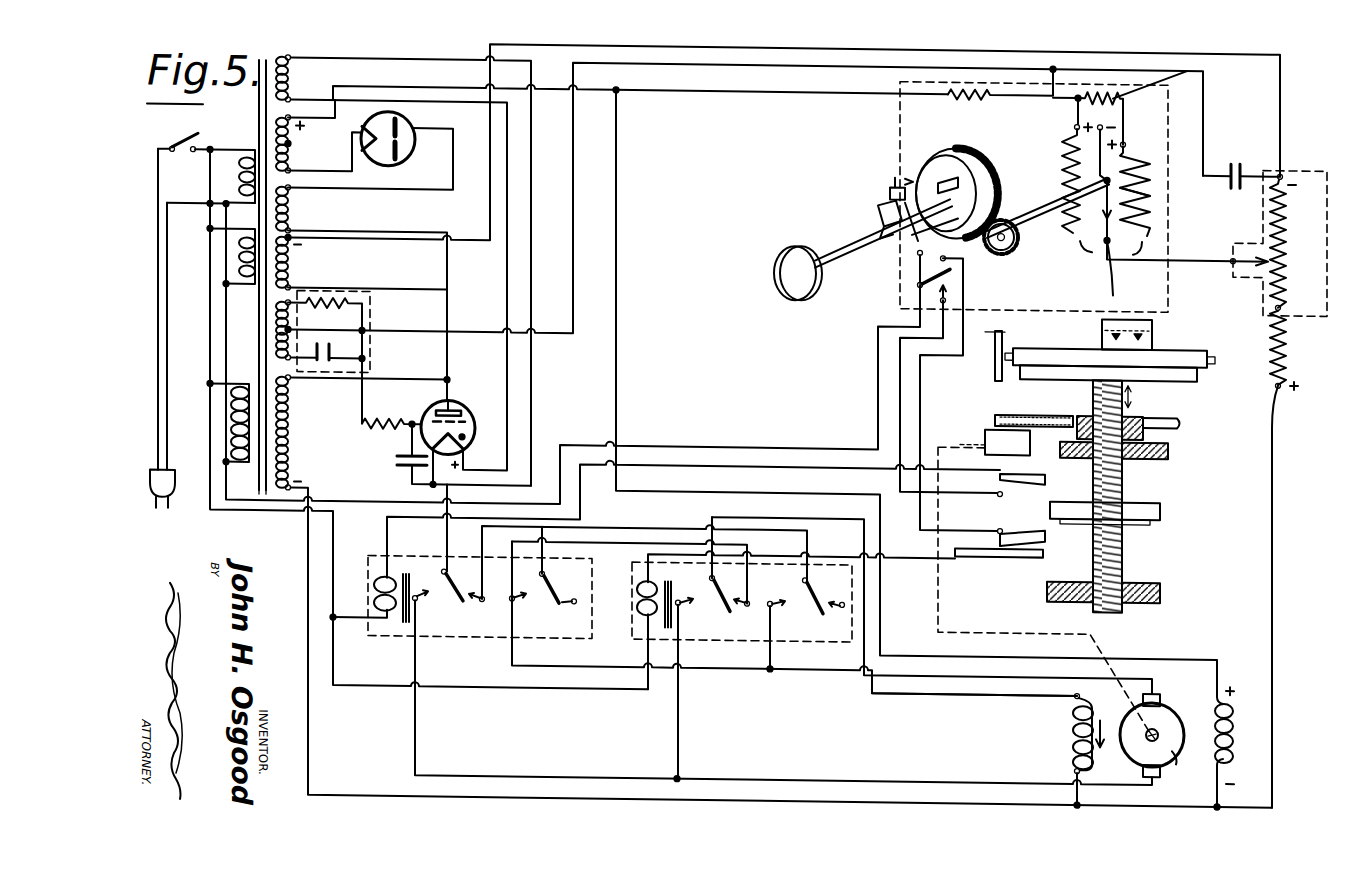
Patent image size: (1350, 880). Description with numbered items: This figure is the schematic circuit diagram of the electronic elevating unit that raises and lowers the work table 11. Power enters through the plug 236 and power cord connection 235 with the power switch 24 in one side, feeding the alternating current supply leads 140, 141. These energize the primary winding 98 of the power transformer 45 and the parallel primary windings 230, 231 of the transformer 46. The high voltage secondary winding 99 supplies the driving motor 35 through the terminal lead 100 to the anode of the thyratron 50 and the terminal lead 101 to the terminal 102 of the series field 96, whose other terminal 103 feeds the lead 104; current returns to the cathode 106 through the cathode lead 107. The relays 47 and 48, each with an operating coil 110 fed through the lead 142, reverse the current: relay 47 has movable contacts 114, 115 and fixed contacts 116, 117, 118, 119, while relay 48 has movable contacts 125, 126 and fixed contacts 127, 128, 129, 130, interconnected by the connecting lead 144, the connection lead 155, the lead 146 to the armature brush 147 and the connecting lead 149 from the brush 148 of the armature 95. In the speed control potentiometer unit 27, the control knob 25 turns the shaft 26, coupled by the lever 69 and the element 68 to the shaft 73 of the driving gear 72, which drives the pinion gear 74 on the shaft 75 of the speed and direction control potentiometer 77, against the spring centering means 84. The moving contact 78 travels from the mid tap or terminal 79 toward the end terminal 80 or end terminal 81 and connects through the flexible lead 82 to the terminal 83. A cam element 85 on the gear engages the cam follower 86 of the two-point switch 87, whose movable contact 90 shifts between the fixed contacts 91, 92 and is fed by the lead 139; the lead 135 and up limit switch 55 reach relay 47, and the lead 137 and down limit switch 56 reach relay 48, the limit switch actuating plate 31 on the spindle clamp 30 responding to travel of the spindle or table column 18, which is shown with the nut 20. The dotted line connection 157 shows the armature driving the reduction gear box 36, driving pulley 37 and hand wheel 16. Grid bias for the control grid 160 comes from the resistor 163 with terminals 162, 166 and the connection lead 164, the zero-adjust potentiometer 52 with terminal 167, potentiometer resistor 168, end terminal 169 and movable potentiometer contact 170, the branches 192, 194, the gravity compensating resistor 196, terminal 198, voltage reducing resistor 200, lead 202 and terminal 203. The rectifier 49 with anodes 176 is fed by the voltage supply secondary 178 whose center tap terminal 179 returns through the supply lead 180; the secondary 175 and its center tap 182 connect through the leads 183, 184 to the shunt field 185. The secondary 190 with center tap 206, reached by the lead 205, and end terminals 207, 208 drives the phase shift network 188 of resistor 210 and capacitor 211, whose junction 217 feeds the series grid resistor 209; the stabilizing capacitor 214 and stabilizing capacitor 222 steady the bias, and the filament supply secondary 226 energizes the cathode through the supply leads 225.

The work table 11 is at (1190, 344).
The hand wheel 16 is at (1178, 418).
The spindle or table column 18 is at (1124, 552).
The nut 20 is at (1170, 446).
The power switch 24 is at (186, 162).
The control knob 25 is at (800, 300).
The shaft 26 is at (855, 240).
The speed control potentiometer unit 27 is at (895, 108).
The spindle clamp or attachment 30 is at (1162, 505).
The limit switch actuating plate 31 is at (1003, 494).
The driving motor 35 is at (1204, 703).
The reduction gear box 36 is at (980, 440).
The driving pulley 37 is at (1000, 372).
The power transformer 45 is at (253, 502).
The transformer 46 is at (252, 118).
The relay 47 is at (336, 541).
The relay 48 is at (618, 641).
The rectifier 49 is at (411, 125).
The thyratron 50 is at (450, 409).
The zero-adjust potentiometer 52 is at (1290, 185).
The up limit switch 55 is at (1080, 486).
The down limit switch 56 is at (988, 402).
The cam 68 is at (878, 205).
The lever 69 is at (889, 181).
The driving gear 72 is at (975, 158).
The shaft 73 is at (944, 196).
The pinion gear 74 is at (1010, 248).
The shaft 75 is at (1022, 229).
The speed and direction control potentiometer 77 is at (1129, 186).
The moving contact 78 is at (1152, 206).
The mid tap or terminal 79 is at (1112, 240).
The end terminal 80 is at (1073, 122).
The end terminal 81 is at (1102, 120).
The flexible lead 82 is at (1100, 125).
The terminal 83 is at (1124, 97).
The spring centering means 84 is at (962, 140).
The cam element 85 is at (910, 240).
The cam follower or movable control element 86 is at (917, 254).
The two-point switch 87 is at (990, 295).
The movable contact 90 is at (917, 284).
The fixed contact 91 is at (961, 260).
The fixed contact 92 is at (966, 285).
The armature 95 is at (1181, 765).
The series field 96 is at (1073, 730).
The primary winding 98 is at (230, 432).
The high voltage secondary winding 99 is at (292, 438).
The terminal lead 100 is at (380, 383).
The terminal lead 101 is at (308, 753).
The terminal 102 is at (1073, 766).
The terminal 103 is at (1072, 695).
The lead 104 is at (891, 698).
The cathode 106 is at (466, 443).
The cathode lead 107 is at (445, 541).
The operating coil 110 is at (640, 584).
The movable contact 114 is at (463, 567).
The movable contact 115 is at (565, 565).
The fixed contact 116 is at (482, 606).
The fixed contact 117 is at (574, 607).
The fixed contact 118 is at (417, 606).
The fixed contact 119 is at (513, 584).
The movable contact 125 is at (715, 564).
The movable contact 126 is at (825, 590).
The fixed contact 127 is at (640, 586).
The fixed contact 128 is at (842, 606).
The fixed contact 129 is at (680, 606).
The fixed contact 130 is at (773, 619).
The lead 135 is at (688, 466).
The lead 137 is at (1000, 553).
The lead 139 is at (735, 447).
The A. C. power supply lead 140 is at (262, 353).
The A. C. power supply lead 141 is at (262, 376).
The lead 142 is at (336, 516).
The connecting lead 144 is at (660, 529).
The lead 146 is at (716, 672).
The armature brush 147 is at (1161, 694).
The brush 148 is at (1160, 774).
The connecting lead 149 is at (648, 779).
The connection lead 155 is at (597, 529).
The dotted line connection 157 is at (1000, 629).
The control grid 160 is at (462, 413).
The terminal 162 is at (1296, 597).
The resistor 163 is at (1208, 357).
The connection lead 164 is at (1272, 634).
The terminal 166 is at (1277, 318).
The terminal 167 is at (1282, 300).
The potentiometer resistor 168 is at (1283, 232).
The end terminal 169 is at (1283, 166).
The movable potentiometer contact 170 is at (1231, 254).
The secondary 175 is at (290, 151).
The rectifier anodes 176 is at (401, 147).
The voltage supply secondary 178 is at (292, 236).
The center tap terminal 179 is at (292, 245).
The supply lead 180 is at (448, 258).
The center tap 182 is at (292, 151).
The lead 183 is at (381, 92).
The lead 184 is at (617, 322).
The shunt field 185 is at (1232, 720).
The phase shift network 188 is at (363, 303).
The secondary 190 is at (262, 330).
The potentiometer arm or branch 192 is at (1060, 150).
The potentiometer arm or branch 194 is at (1168, 158).
The balancing or gravity compensating resistor 196 is at (1203, 65).
The terminal 198 is at (1053, 93).
The series voltage reducing resistor 200 is at (948, 91).
The lead 202 is at (752, 92).
The terminal 203 is at (620, 93).
The lead 205 is at (866, 65).
The center tap 206 is at (365, 333).
The end terminal 207 is at (262, 307).
The end terminal 208 is at (276, 364).
The series grid resistor 209 is at (384, 441).
The resistor 210 is at (356, 293).
The capacitor 211 is at (345, 353).
The stabilizing capacitor 214 is at (397, 480).
The junction 217 is at (345, 364).
The stabilizing capacitor 222 is at (1250, 146).
The supply leads 225 is at (531, 401).
The filament supply secondary 226 is at (325, 88).
The primary winding 230 is at (211, 165).
The primary winding 231 is at (246, 270).
The power cord connection 235 is at (195, 470).
The plug 236 is at (167, 494).